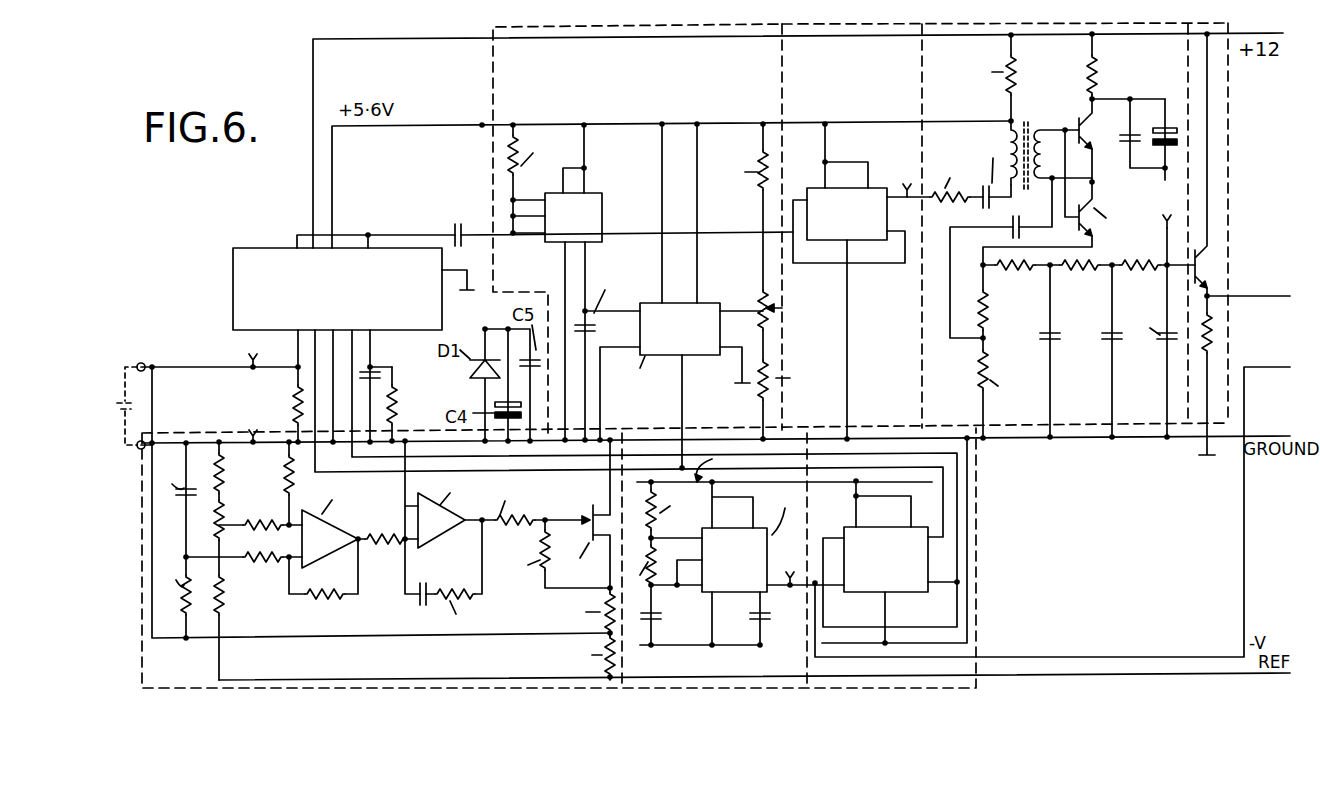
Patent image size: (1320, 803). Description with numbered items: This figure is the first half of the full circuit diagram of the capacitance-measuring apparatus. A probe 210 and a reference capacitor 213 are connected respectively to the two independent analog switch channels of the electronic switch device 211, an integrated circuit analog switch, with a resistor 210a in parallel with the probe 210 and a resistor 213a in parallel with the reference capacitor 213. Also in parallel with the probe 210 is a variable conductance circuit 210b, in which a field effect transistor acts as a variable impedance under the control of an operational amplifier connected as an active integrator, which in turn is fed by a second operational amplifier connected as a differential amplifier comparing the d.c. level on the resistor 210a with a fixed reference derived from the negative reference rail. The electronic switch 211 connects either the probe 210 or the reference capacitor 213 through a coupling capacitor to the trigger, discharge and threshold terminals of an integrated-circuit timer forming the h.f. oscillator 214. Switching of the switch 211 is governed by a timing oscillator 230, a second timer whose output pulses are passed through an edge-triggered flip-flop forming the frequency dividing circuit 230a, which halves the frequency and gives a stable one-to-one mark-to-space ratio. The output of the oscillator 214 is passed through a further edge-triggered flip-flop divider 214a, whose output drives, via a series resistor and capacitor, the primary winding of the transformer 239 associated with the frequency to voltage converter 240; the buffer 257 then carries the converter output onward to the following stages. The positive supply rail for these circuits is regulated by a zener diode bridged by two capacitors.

The probe 210 is at (118, 398).
The resistor 210a is at (295, 407).
The variable conductance circuit 210b is at (200, 440).
The electronic switch device 211 is at (248, 256).
The reference capacitor 213 is at (385, 372).
The resistor 213a is at (398, 413).
The h.f. oscillator 214 is at (508, 84).
The frequency divider circuit 214a is at (807, 72).
The timing oscillator 230 is at (642, 432).
The frequency dividing circuit 230a is at (888, 430).
The transformer 239 is at (1022, 130).
The frequency to voltage converter 240 is at (937, 63).
The buffer 257 is at (1215, 143).